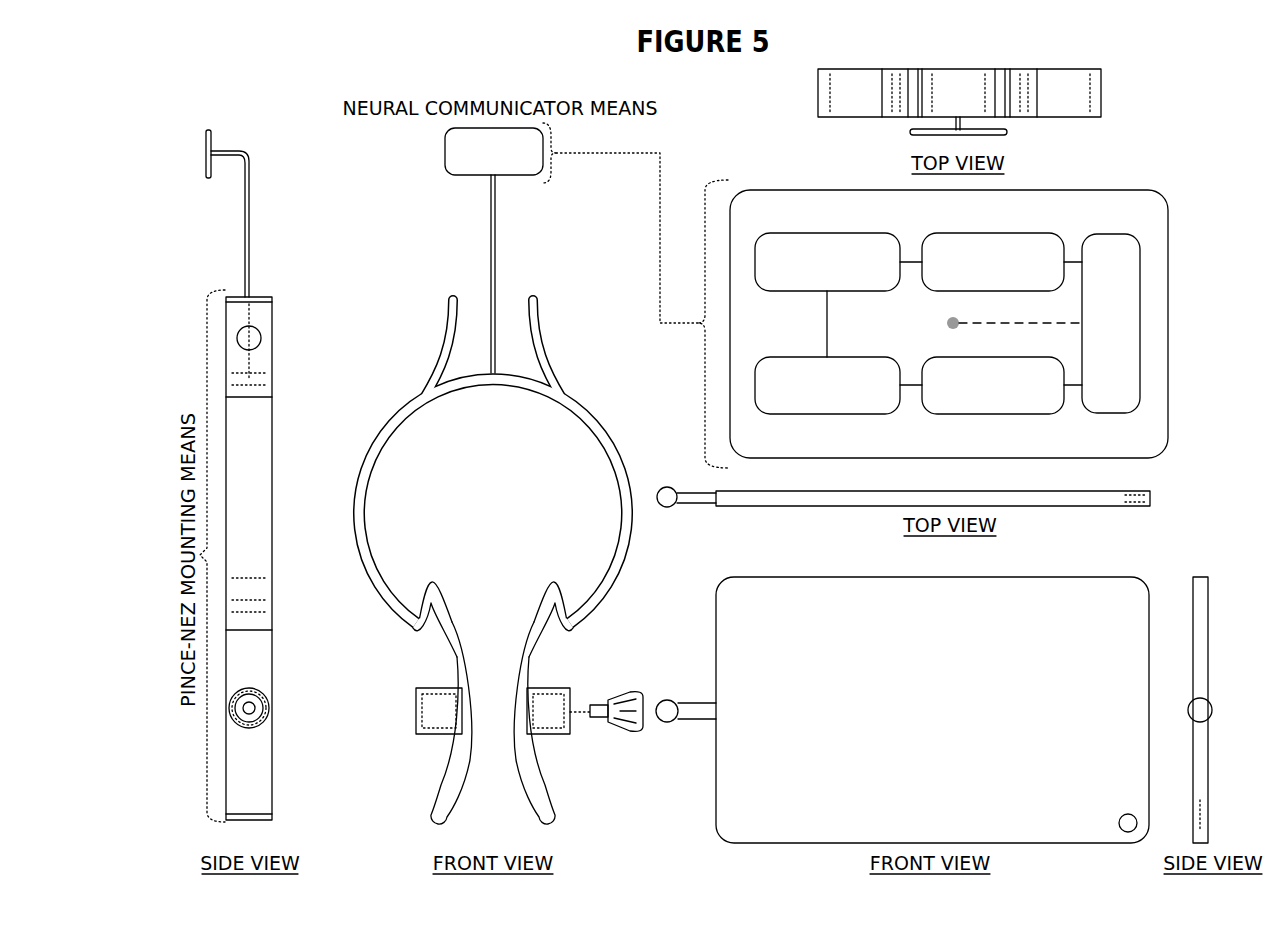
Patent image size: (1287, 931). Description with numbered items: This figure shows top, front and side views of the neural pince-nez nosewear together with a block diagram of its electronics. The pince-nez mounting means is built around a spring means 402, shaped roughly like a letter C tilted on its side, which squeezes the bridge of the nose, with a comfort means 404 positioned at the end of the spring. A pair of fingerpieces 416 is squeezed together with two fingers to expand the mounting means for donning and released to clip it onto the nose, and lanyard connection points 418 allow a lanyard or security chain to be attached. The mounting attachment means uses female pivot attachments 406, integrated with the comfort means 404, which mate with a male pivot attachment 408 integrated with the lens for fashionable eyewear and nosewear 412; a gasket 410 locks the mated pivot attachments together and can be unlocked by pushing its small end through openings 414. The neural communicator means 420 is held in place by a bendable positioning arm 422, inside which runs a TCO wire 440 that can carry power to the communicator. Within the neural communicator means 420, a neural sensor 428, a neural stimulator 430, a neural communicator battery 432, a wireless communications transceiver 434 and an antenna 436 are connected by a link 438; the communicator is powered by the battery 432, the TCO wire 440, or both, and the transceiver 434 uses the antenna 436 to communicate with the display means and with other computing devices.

The spring means 402 is at (493, 501).
The comfort means 404 is at (528, 616).
The pivot attachments (female) 406 is at (262, 690).
The pivot attachments (male) 408 is at (667, 723).
The gasket 410 is at (632, 690).
The lens for fashionable eyewear and nosewear 412 is at (850, 507).
The openings 414 is at (513, 713).
The fingerpieces 416 is at (250, 297).
The lanyard connection points 418 is at (256, 332).
The neural communicator means 420 is at (208, 128).
The bendable positioning arm 422 is at (248, 152).
The neural sensor 428 is at (803, 233).
The neural stimulator 430 is at (971, 233).
The neural communicator battery 432 is at (1112, 234).
The wireless communications transceiver 434 is at (801, 414).
The antenna 436 is at (969, 414).
The link 438 is at (826, 335).
The TCO wire 440 is at (1035, 322).